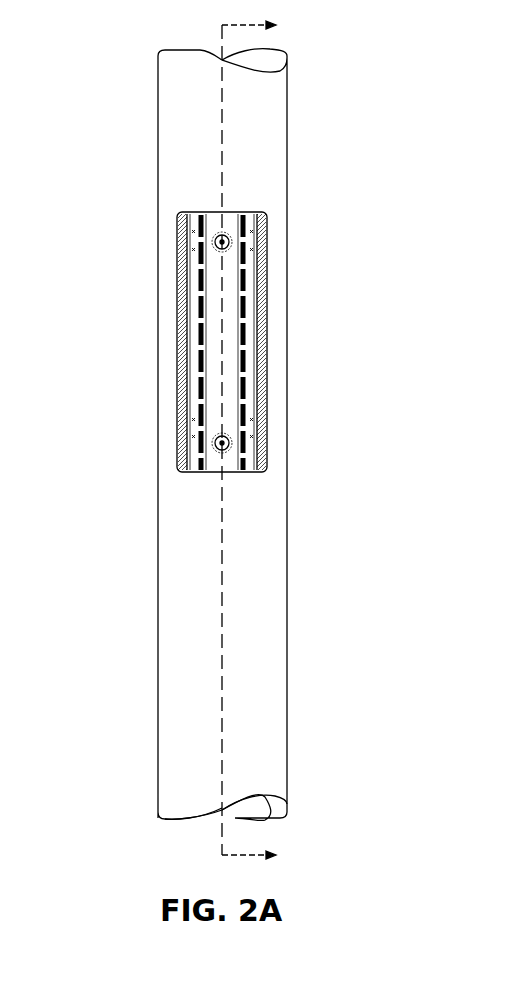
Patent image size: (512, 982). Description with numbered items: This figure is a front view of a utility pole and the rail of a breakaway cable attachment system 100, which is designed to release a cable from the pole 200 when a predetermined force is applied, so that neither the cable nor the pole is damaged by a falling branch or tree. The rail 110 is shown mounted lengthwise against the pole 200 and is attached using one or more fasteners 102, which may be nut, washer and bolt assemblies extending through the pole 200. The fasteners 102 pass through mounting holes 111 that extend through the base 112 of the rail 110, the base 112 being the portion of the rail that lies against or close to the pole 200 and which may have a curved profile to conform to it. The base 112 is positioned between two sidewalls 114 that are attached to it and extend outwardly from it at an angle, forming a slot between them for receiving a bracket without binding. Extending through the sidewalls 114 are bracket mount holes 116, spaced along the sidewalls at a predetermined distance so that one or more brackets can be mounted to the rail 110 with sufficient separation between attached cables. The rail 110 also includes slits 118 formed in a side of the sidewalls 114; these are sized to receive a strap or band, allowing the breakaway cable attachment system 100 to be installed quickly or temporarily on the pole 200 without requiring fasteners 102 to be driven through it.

The pole 200 is at (158, 84).
The breakaway cable attachment system 100 is at (352, 205).
The rail 110 is at (180, 185).
The base 112 is at (225, 211).
The sidewalls 114 is at (177, 328).
The bracket mount holes 116 is at (247, 331).
The slits 118 is at (196, 380).
The fasteners 102 is at (214, 243).
The mounting holes 111 is at (211, 255).